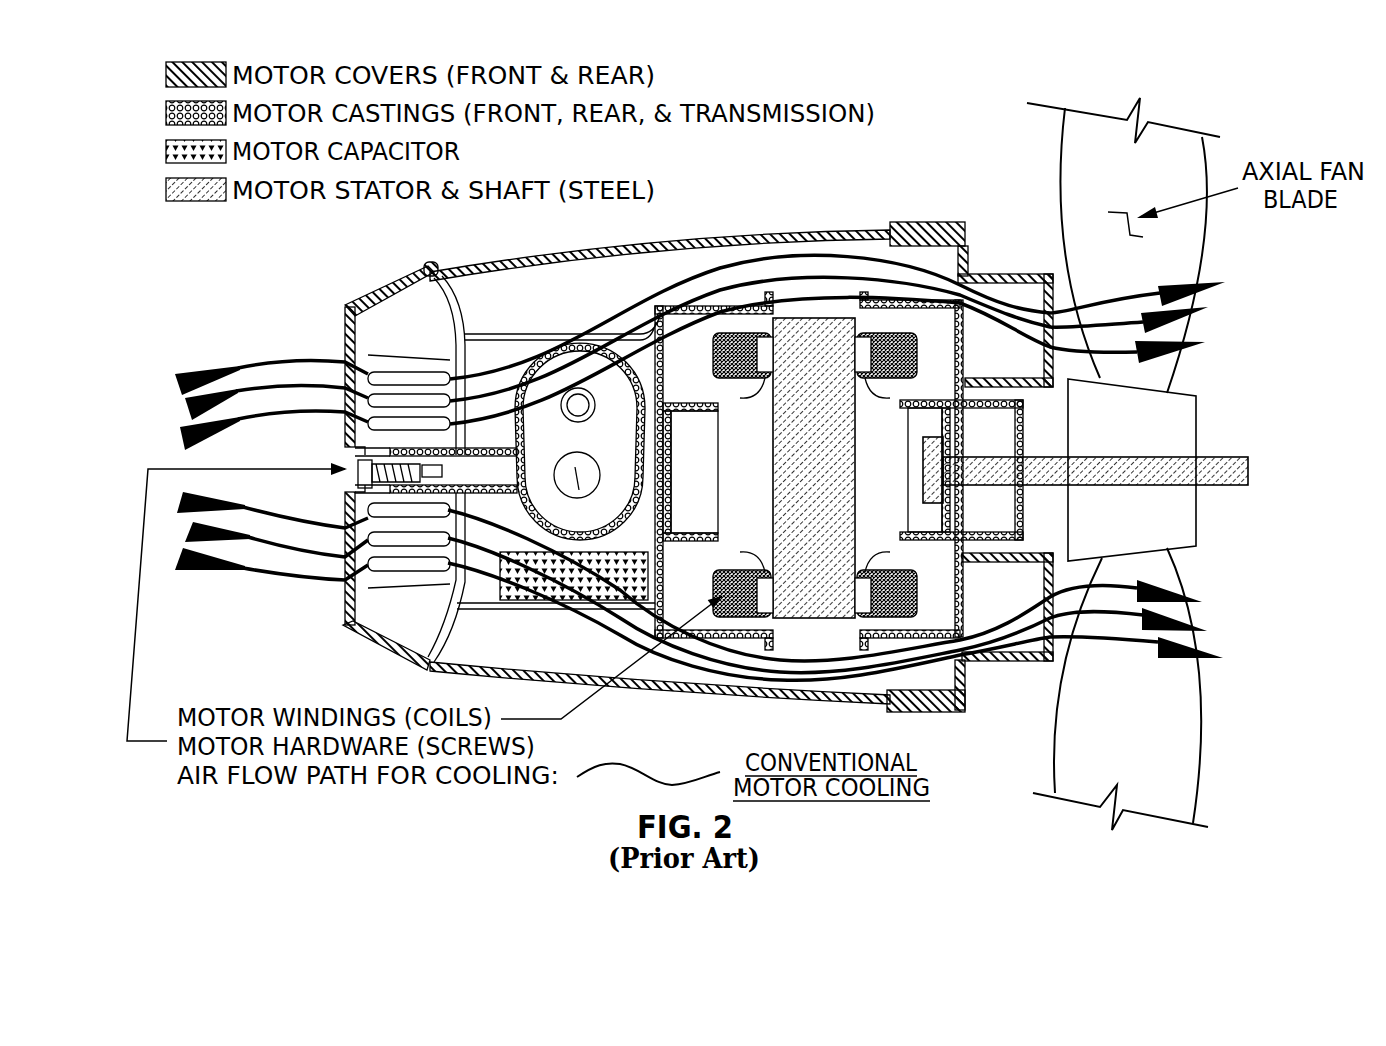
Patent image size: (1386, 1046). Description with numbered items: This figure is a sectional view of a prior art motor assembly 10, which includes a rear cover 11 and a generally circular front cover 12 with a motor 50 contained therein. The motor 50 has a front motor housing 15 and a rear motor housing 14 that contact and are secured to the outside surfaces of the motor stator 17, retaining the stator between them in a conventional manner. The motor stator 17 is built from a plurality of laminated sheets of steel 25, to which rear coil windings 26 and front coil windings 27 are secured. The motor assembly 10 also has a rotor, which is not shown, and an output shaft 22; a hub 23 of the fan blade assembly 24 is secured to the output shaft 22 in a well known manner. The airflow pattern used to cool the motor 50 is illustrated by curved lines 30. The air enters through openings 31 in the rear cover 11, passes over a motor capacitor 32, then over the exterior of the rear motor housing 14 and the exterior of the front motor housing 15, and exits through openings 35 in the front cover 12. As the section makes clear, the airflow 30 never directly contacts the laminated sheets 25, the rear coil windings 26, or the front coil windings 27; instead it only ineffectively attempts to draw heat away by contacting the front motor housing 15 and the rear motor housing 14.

The motor assembly 10 is at (822, 167).
The rear cover 11 is at (442, 273).
The front cover 12 is at (972, 242).
The rear motor housing 14 is at (701, 248).
The front motor housing 15 is at (875, 244).
The motor stator 17 is at (790, 466).
The output shaft 22 is at (1110, 456).
The hub 23 is at (1180, 410).
The fan blade assembly 24 is at (1267, 539).
The laminated sheets of steel 25 is at (770, 250).
The rear coil windings 26 is at (752, 392).
The front coil windings 27 is at (880, 392).
The curved lines 30 is at (278, 378).
The openings 31 is at (365, 306).
The motor capacitor 32 is at (530, 598).
The openings 35 is at (1040, 273).
The motor 50 is at (813, 248).